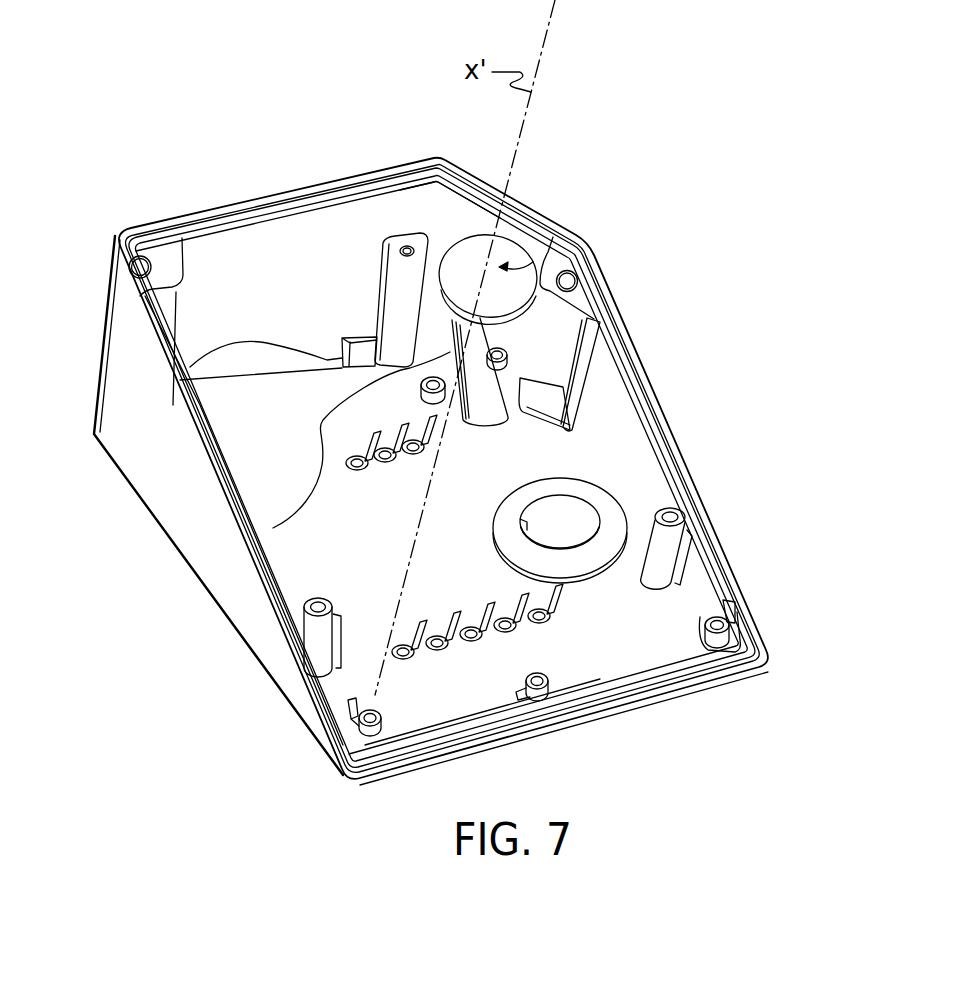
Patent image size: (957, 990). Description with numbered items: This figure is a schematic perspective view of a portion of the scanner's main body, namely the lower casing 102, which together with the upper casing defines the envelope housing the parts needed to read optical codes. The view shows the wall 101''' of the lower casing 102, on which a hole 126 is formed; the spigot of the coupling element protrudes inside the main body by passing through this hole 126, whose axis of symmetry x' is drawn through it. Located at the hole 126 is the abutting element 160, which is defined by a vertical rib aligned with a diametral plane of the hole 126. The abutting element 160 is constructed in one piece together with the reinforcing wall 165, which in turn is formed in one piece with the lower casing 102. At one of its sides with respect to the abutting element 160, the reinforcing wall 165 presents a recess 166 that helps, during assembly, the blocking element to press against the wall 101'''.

The lower casing 102 is at (659, 379).
The wall 101''' is at (391, 178).
The hole 126 is at (538, 252).
The recess 166 is at (449, 332).
The reinforcing wall 165 is at (522, 385).
The abutting element 160 is at (273, 528).